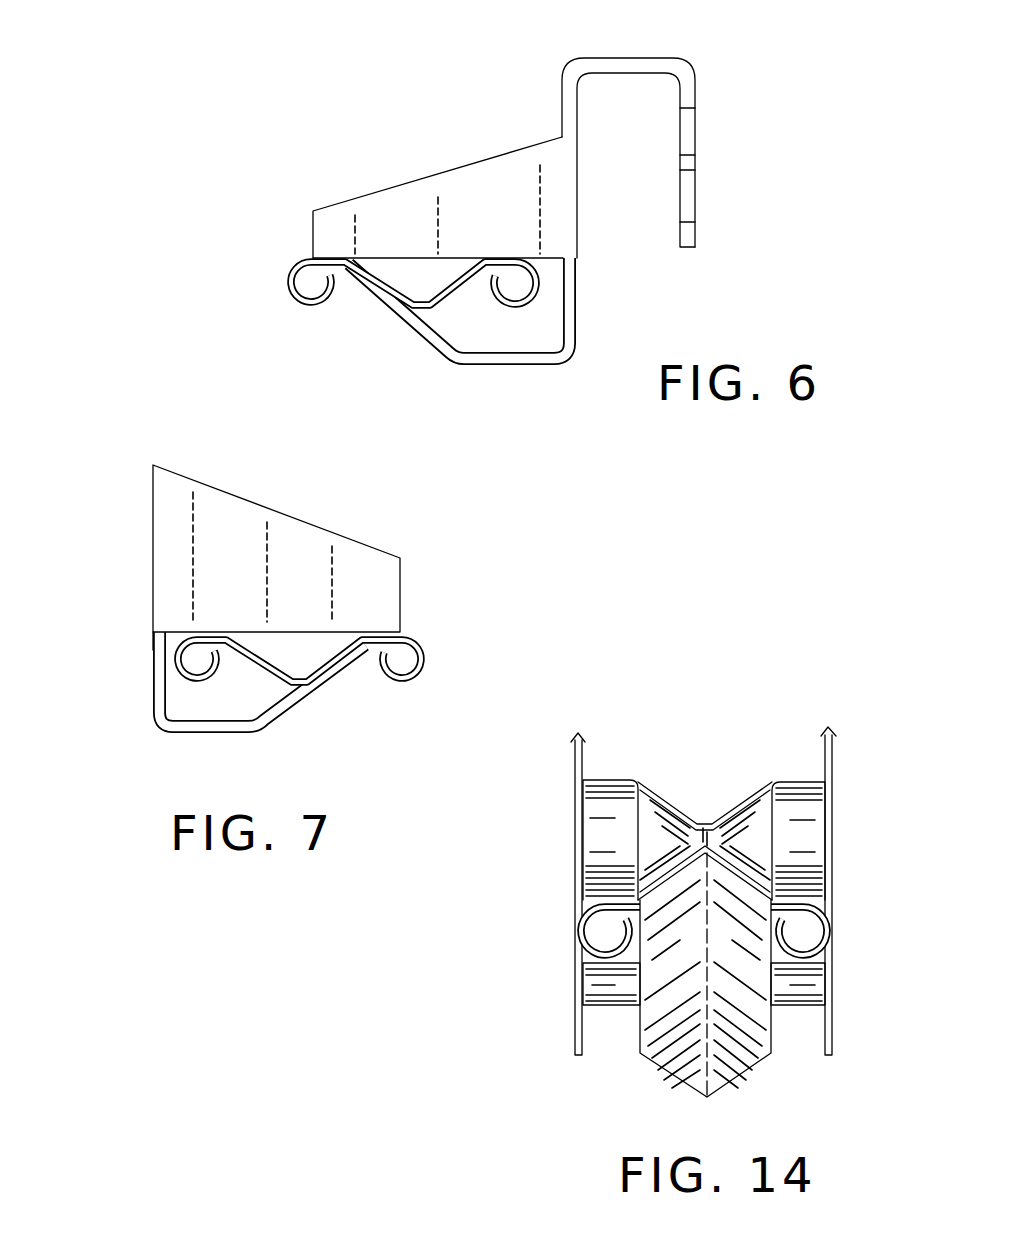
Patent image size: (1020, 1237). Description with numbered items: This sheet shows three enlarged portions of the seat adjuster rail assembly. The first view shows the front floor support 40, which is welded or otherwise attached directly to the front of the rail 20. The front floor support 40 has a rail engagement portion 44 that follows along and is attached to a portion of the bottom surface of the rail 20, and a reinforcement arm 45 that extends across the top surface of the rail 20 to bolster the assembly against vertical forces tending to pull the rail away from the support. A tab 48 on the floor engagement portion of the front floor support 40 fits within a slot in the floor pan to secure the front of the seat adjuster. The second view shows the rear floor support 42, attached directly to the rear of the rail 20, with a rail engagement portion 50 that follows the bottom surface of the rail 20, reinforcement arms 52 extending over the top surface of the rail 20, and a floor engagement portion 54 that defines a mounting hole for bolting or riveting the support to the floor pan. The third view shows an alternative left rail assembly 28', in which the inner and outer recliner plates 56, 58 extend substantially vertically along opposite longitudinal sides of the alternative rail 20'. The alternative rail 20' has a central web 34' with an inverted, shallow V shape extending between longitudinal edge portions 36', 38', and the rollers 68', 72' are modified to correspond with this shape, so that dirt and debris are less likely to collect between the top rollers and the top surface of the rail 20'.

In FIG. 6, the rail 20 is at (430, 340).
In FIG. 7, the rail 20 is at (347, 648).
In FIG. 6, the front floor support 40 is at (698, 99).
In FIG. 6, the rail engagement portion 44 is at (408, 335).
In FIG. 6, the reinforcement arm 45 is at (425, 177).
In FIG. 6, the tab 48 is at (698, 204).
In FIG. 7, the rear floor support 42 is at (152, 550).
In FIG. 7, the rail engagement portion 50 is at (292, 715).
In FIG. 7, the reinforcement arms 52 is at (326, 537).
In FIG. 7, the floor engagement portion 54 is at (157, 642).
In FIG. 14, the inner recliner plate 56 is at (575, 780).
In FIG. 14, the outer recliner plate 58 is at (832, 778).
In FIG. 14, the alternative left rail assembly 28' is at (852, 669).
In FIG. 14, the alternative rail 20' is at (637, 785).
In FIG. 14, the front upper roller 68' is at (704, 796).
In FIG. 14, the central web 34' is at (721, 797).
In FIG. 14, the longitudinal edge portion 38' is at (547, 907).
In FIG. 14, the longitudinal edge portion 36' is at (853, 914).
In FIG. 14, the roller 72' is at (712, 987).